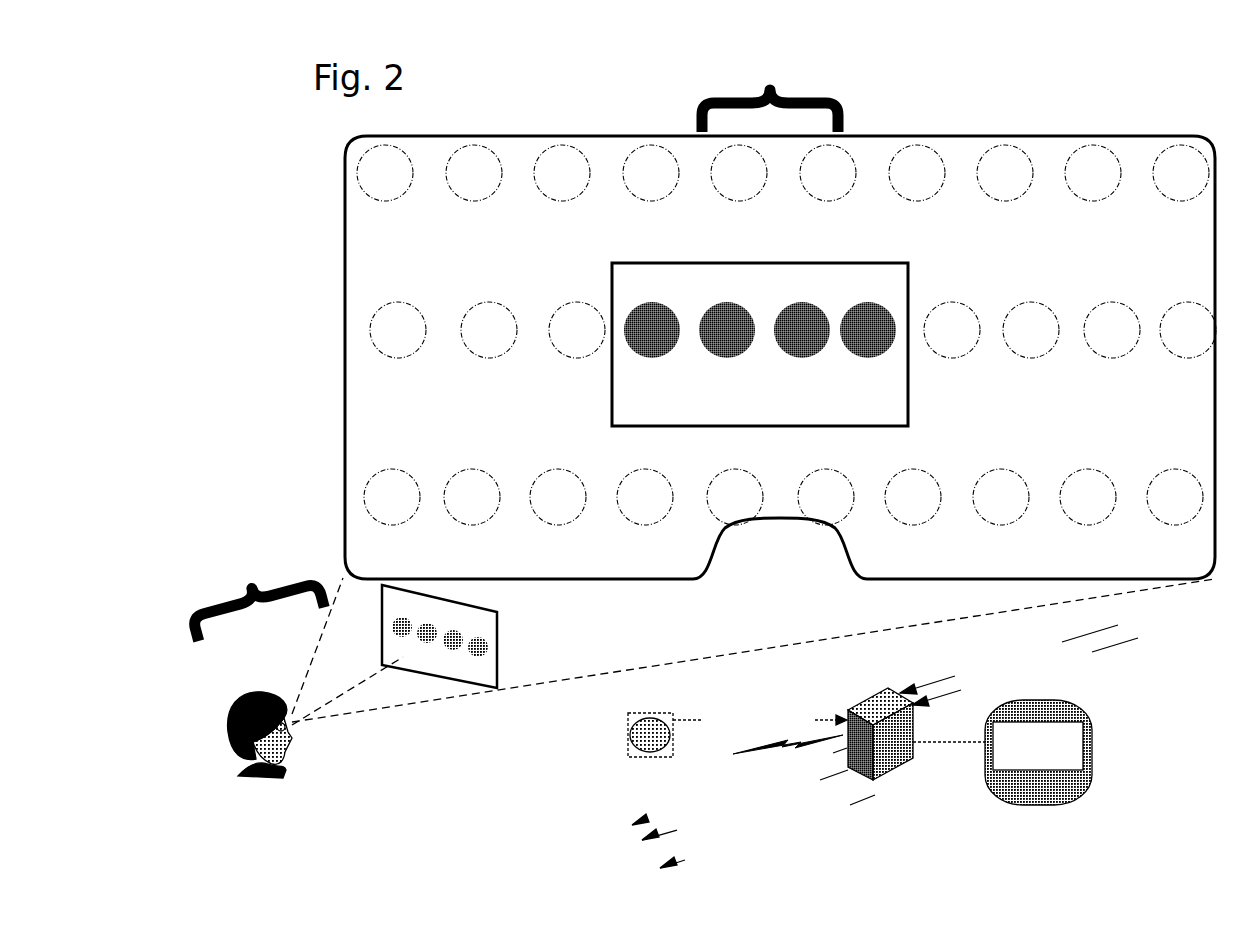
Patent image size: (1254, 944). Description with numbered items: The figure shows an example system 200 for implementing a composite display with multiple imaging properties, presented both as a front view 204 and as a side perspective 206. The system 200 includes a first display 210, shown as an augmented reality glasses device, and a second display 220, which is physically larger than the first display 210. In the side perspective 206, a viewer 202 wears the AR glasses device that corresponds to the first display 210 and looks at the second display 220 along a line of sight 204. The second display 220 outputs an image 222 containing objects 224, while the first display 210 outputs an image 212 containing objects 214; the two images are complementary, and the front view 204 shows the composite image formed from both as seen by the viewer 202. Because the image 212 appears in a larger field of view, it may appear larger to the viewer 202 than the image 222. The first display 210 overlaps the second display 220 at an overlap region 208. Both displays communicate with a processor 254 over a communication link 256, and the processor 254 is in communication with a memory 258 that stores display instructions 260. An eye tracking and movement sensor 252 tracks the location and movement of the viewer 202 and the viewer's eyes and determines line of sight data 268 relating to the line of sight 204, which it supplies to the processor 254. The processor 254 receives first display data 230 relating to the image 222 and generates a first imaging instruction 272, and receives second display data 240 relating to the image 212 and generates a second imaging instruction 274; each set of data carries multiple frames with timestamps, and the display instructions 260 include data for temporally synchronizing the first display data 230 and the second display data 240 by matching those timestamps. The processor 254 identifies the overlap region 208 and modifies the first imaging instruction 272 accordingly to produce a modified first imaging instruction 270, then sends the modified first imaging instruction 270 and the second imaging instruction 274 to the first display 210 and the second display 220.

The system 200 is at (300, 334).
The viewer 202 is at (268, 778).
The line of sight 204 is at (340, 690).
The side perspective 206 is at (296, 636).
The overlap region 208 is at (604, 256).
The first display 210 is at (270, 693).
The image 212 is at (467, 251).
The objects 214 is at (577, 320).
The second display 220 is at (483, 620).
The image 222 is at (850, 400).
The objects 224 is at (868, 330).
The first display data 230 is at (1002, 648).
The second display data 240 is at (1060, 683).
The eye tracking and movement sensor 252 is at (650, 757).
The processor 254 is at (910, 760).
The communication link 256 is at (778, 750).
The memory 258 is at (1023, 805).
The display instructions 260 is at (1072, 743).
The line of sight data 268 is at (768, 692).
The modified first imaging instruction 270 is at (703, 775).
The first imaging instruction 272 is at (746, 812).
The second imaging instruction 274 is at (778, 838).